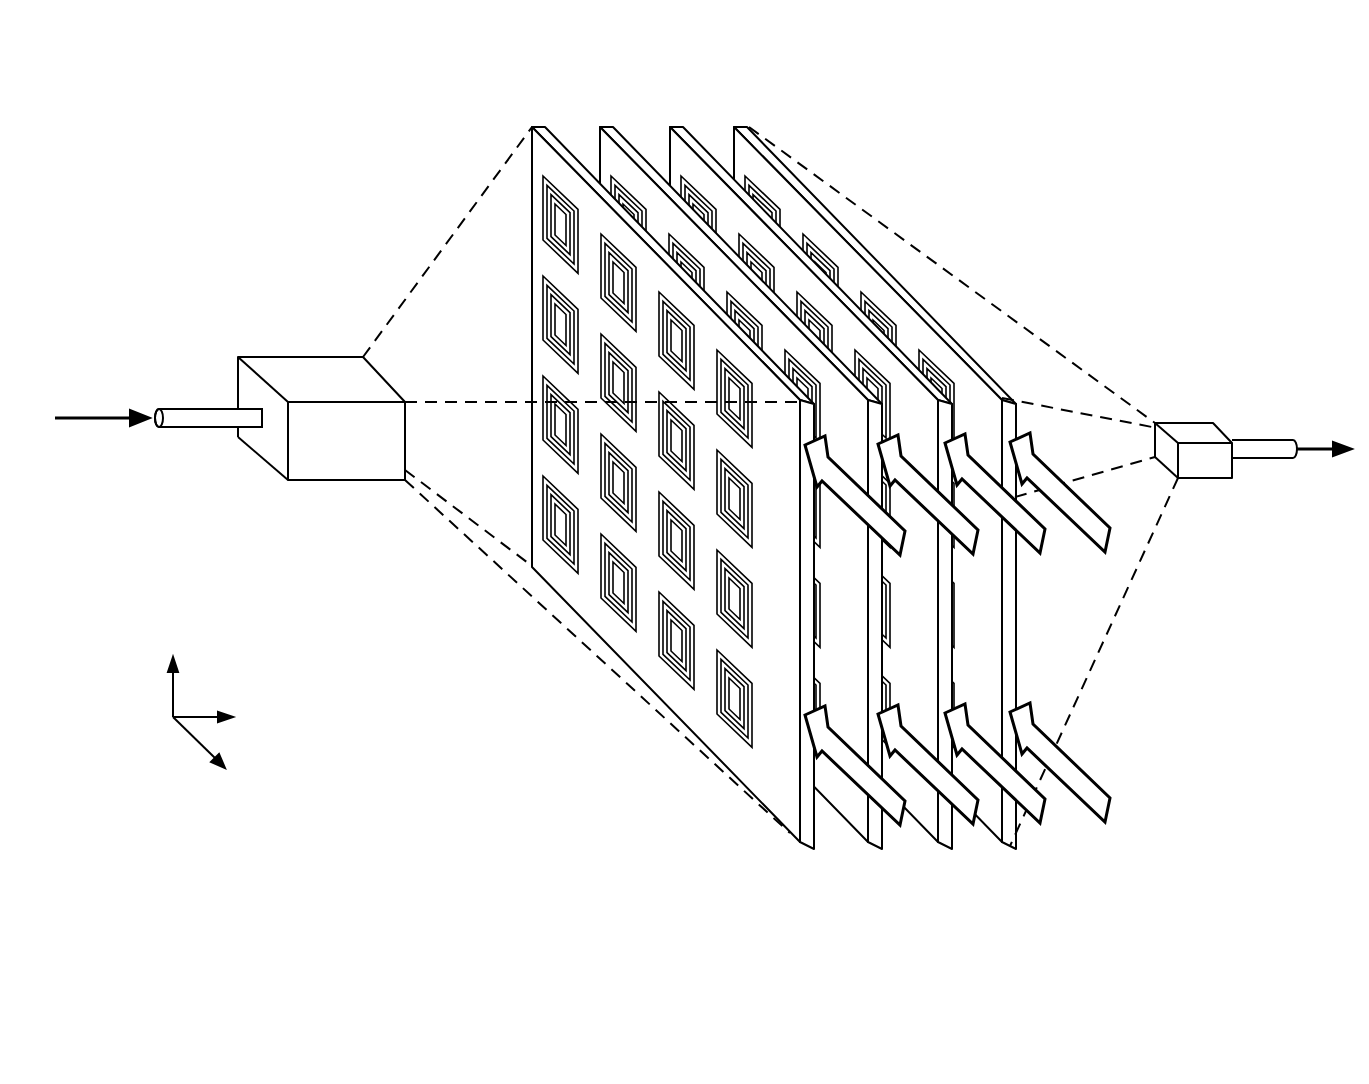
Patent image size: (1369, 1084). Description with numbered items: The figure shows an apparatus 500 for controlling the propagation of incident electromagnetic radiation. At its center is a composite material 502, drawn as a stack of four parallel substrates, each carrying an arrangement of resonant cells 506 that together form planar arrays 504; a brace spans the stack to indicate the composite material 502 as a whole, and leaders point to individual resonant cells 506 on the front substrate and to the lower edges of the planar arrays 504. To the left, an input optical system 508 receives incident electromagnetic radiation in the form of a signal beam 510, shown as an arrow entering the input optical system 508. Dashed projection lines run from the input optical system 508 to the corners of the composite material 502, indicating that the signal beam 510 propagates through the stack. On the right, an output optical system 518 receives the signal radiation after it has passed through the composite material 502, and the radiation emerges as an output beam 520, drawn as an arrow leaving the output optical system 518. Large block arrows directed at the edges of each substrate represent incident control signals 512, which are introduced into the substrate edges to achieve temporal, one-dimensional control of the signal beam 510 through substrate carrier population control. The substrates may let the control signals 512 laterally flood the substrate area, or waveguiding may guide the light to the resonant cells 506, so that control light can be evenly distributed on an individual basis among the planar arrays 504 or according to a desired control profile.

The apparatus 500 is at (463, 820).
The composite material 502 is at (736, 486).
The planar arrays 504 is at (736, 517).
The resonant cells 506 is at (541, 372).
The input optical system 508 is at (355, 480).
The signal beam 510 is at (100, 410).
The incident control signals 512 is at (1065, 513).
The output optical system 518 is at (1190, 420).
The output beam 520 is at (1318, 440).